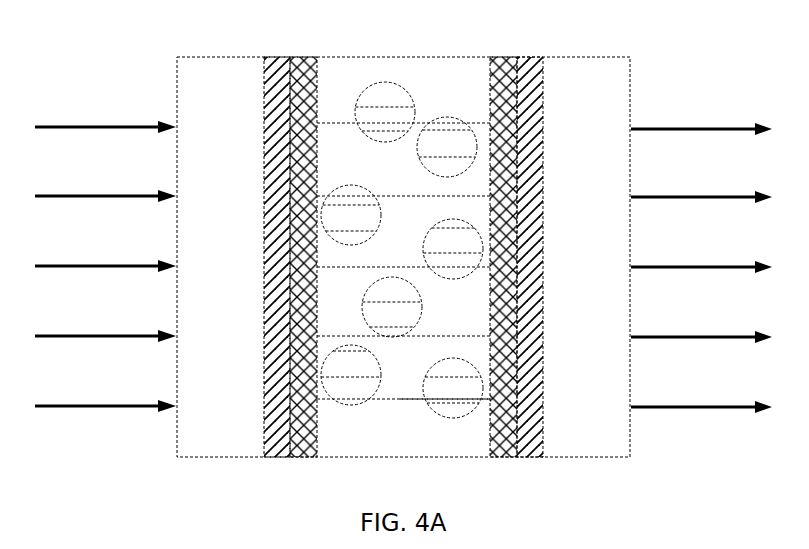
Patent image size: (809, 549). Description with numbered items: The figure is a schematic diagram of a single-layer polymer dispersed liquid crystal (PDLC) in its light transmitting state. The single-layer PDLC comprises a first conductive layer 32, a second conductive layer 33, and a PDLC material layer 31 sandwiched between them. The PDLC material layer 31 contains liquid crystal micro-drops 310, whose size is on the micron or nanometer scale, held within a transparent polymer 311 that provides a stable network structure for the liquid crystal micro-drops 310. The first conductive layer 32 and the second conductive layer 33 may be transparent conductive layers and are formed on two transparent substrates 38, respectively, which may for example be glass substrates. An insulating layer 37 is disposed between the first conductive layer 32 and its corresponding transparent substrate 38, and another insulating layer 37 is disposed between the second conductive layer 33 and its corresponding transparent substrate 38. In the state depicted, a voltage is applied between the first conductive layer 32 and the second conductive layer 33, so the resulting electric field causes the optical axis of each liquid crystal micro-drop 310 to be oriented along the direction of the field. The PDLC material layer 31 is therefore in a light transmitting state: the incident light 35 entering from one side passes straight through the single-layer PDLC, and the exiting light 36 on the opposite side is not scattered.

The PDLC material layer 31 is at (428, 55).
The liquid crystal micro-drop 310 is at (347, 395).
The transparent polymer 311 is at (430, 425).
The first conductive layer 32 is at (303, 55).
The second conductive layer 33 is at (505, 55).
The incident light 35 is at (104, 122).
The exiting light 36 is at (716, 124).
The insulating layer 37 is at (280, 55).
The transparent substrate 38 is at (220, 55).